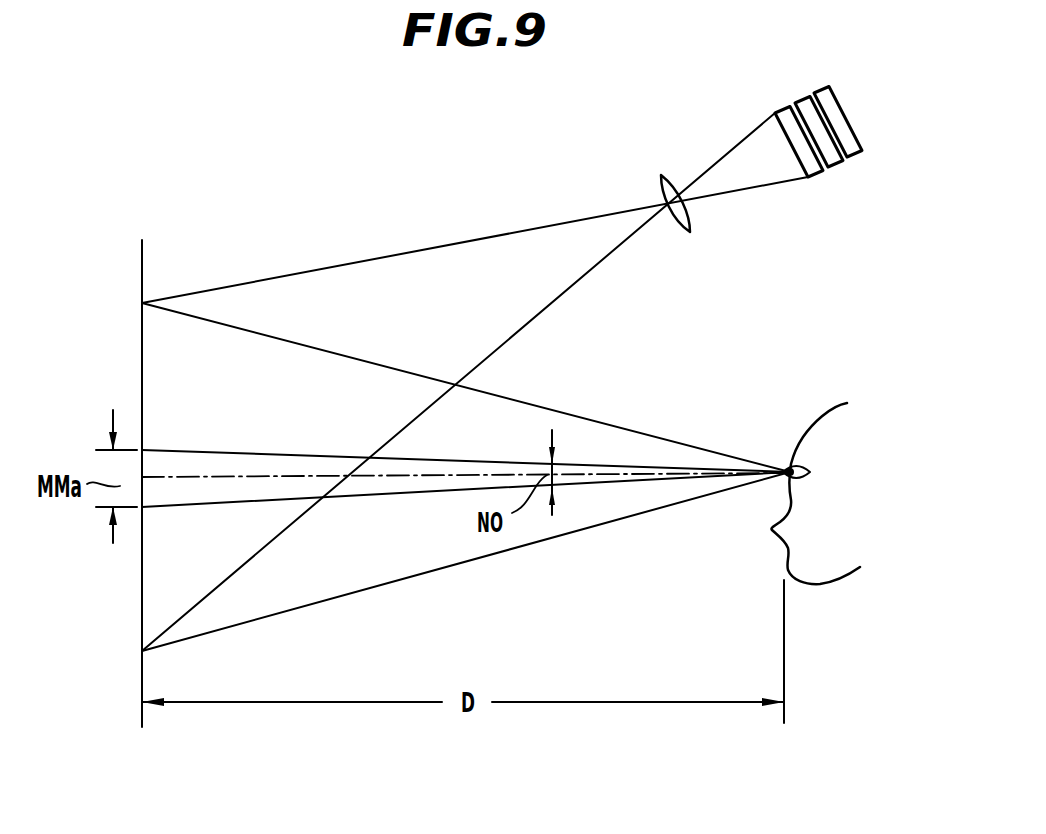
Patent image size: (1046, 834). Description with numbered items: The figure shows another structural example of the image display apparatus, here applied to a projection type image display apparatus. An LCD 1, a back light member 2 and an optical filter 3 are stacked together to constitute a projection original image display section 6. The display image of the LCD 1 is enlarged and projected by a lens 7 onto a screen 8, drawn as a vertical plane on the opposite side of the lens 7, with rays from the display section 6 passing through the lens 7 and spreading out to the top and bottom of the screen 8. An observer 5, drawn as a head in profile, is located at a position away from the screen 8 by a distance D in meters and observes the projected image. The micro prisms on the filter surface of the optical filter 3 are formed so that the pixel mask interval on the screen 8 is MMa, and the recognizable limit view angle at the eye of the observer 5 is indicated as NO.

The LCD 1 is at (832, 169).
The back light member 2 is at (857, 158).
The optical filter 3 is at (806, 176).
The observer 5 is at (830, 420).
The projection original image display section 6 is at (905, 192).
The lens 7 is at (661, 183).
The screen 8 is at (140, 678).